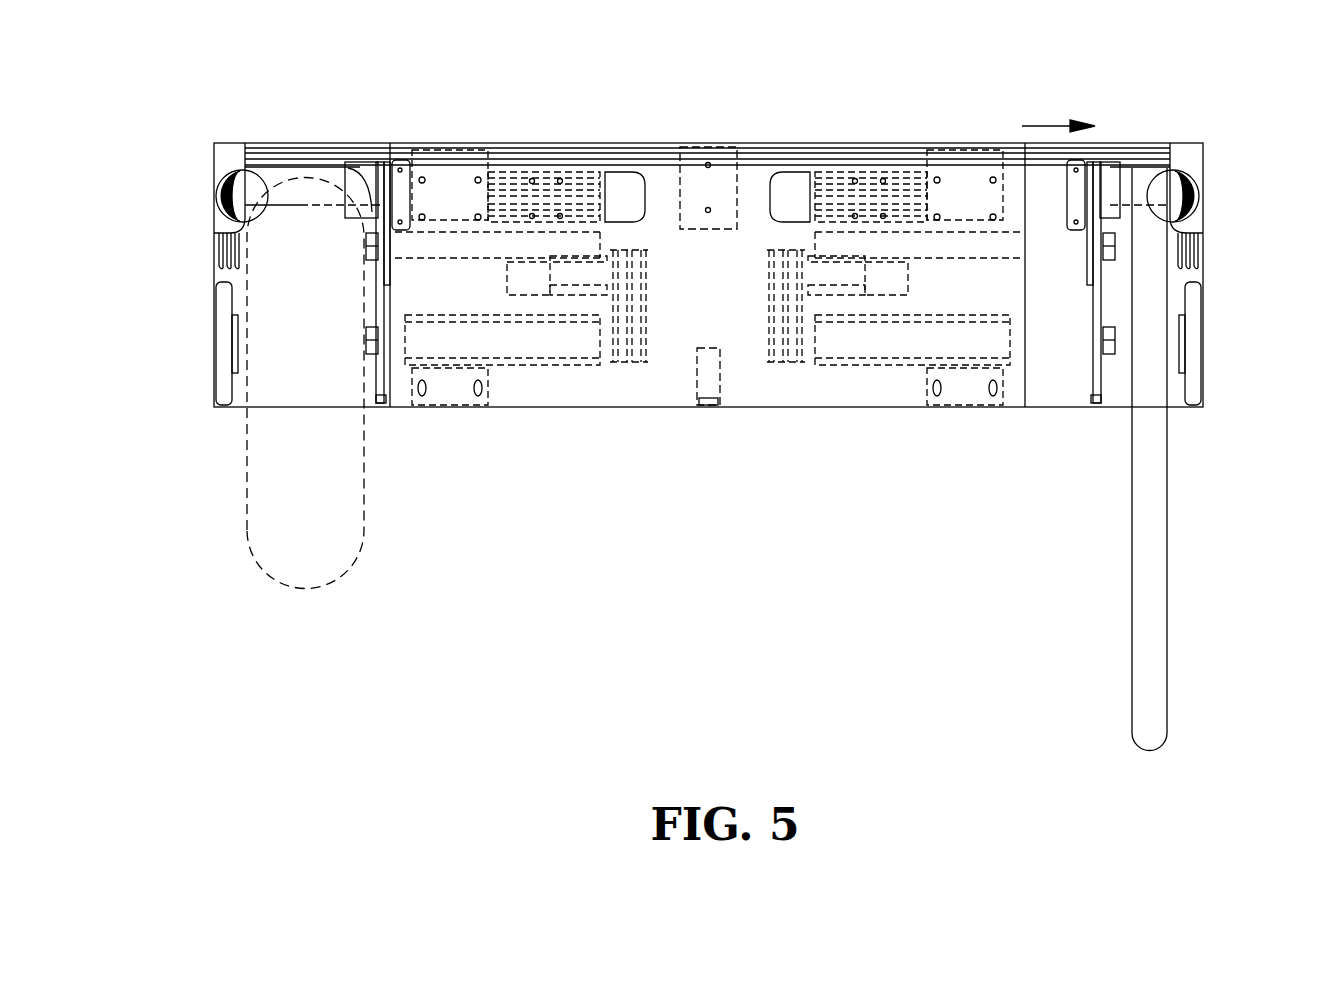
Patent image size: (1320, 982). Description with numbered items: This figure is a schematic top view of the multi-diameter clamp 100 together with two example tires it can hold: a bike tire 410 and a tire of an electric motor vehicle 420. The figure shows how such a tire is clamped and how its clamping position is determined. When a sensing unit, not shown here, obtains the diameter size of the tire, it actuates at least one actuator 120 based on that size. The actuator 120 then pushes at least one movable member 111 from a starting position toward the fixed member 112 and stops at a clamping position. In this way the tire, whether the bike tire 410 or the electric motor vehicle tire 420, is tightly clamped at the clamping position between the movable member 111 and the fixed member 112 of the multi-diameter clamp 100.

The multi-diameter clamp 100 is at (188, 64).
The movable member 111 is at (378, 403).
The fixed member 112 is at (228, 271).
The actuator 120 is at (572, 222).
The bike tire 410 is at (1141, 725).
The tire of an electric motor vehicle 420 is at (298, 565).